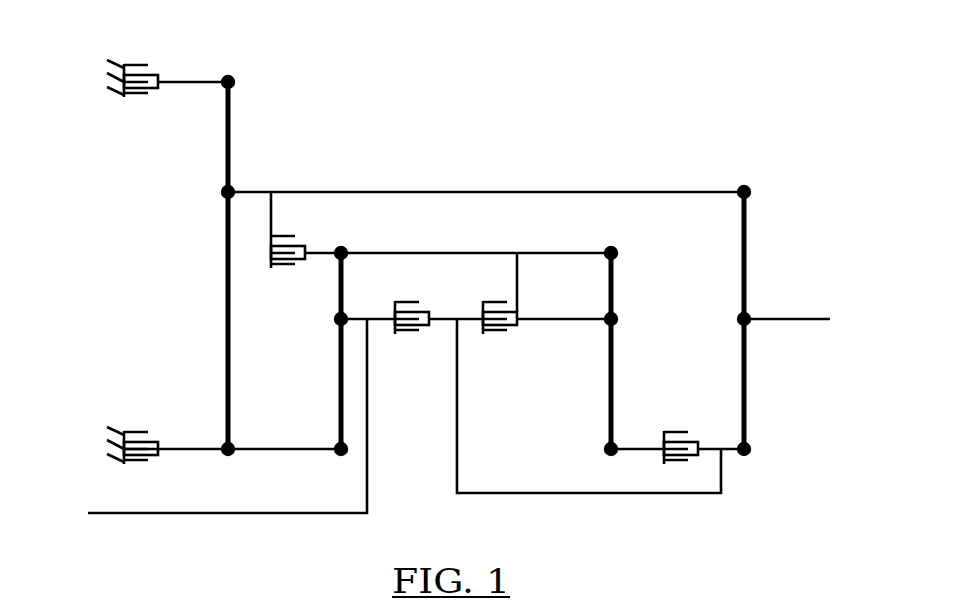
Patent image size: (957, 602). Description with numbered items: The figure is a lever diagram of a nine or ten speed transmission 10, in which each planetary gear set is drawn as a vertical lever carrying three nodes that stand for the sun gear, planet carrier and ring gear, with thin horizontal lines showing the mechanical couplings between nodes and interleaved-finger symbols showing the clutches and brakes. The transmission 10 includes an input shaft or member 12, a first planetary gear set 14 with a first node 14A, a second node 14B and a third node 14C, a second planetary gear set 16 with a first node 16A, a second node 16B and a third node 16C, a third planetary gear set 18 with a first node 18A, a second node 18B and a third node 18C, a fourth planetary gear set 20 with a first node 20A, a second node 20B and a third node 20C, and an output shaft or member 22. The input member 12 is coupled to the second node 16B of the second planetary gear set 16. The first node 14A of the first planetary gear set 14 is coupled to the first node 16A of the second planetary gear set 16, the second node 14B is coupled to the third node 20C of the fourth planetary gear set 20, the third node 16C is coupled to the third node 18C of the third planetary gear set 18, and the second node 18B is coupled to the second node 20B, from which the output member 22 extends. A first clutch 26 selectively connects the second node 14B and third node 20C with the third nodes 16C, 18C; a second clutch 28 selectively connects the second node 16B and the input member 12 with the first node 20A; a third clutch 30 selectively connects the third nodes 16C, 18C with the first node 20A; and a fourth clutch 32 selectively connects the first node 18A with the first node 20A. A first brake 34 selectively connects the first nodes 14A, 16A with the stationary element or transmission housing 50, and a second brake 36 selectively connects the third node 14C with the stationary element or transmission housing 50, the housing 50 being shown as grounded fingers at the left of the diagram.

The transmission 10 is at (764, 90).
The input shaft or member 12 is at (101, 514).
The first planetary gear set 14 is at (276, 120).
The first node of the first planetary gear set 14A is at (228, 457).
The second node of the first planetary gear set 14B is at (224, 192).
The third node of the first planetary gear set 14C is at (227, 79).
The second planetary gear set 16 is at (357, 390).
The first node of the second planetary gear set 16A is at (341, 457).
The second node of the second planetary gear set 16B is at (338, 320).
The third node of the second planetary gear set 16C is at (345, 249).
The third planetary gear set 18 is at (590, 288).
The first node of the third planetary gear set 18A is at (611, 456).
The second node of the third planetary gear set 18B is at (606, 319).
The third node of the third planetary gear set 18C is at (614, 249).
The fourth planetary gear set 20 is at (773, 222).
The first node of the fourth planetary gear set 20A is at (745, 456).
The second node of the fourth planetary gear set 20B is at (740, 323).
The third node of the fourth planetary gear set 20C is at (742, 188).
The output shaft or member 22 is at (813, 321).
The first clutch 26 is at (279, 269).
The second clutch 28 is at (412, 335).
The third clutch 30 is at (492, 335).
The fourth clutch 32 is at (682, 433).
The first brake 34 is at (138, 437).
The second brake 36 is at (136, 97).
The stationary element or transmission housing 50 is at (117, 63).